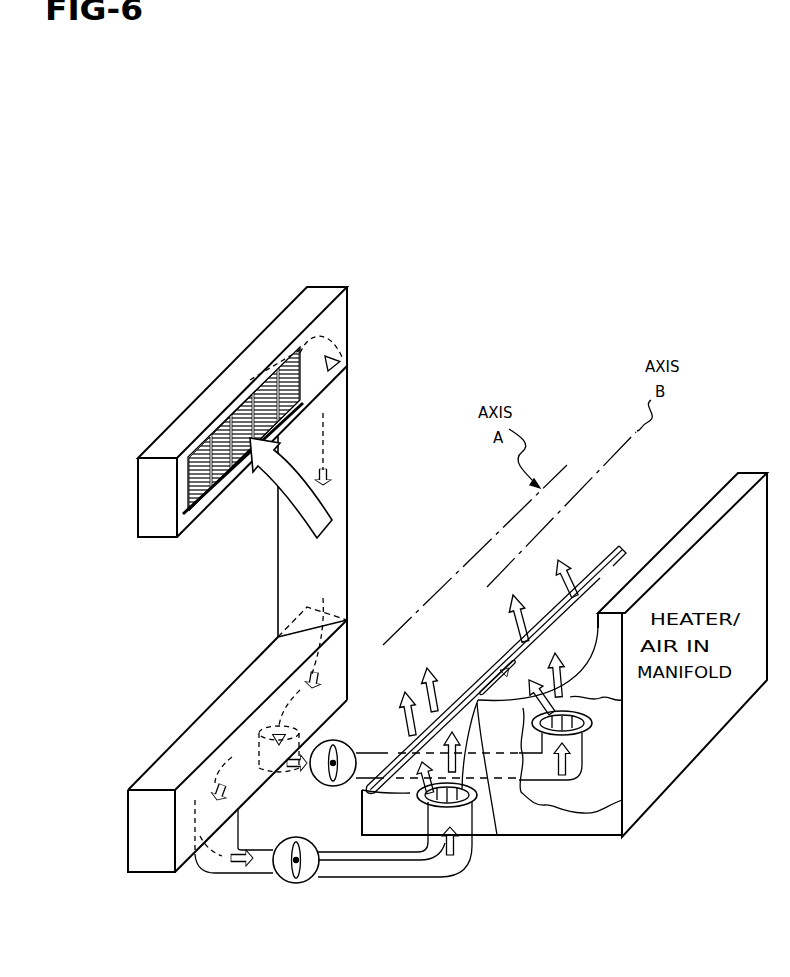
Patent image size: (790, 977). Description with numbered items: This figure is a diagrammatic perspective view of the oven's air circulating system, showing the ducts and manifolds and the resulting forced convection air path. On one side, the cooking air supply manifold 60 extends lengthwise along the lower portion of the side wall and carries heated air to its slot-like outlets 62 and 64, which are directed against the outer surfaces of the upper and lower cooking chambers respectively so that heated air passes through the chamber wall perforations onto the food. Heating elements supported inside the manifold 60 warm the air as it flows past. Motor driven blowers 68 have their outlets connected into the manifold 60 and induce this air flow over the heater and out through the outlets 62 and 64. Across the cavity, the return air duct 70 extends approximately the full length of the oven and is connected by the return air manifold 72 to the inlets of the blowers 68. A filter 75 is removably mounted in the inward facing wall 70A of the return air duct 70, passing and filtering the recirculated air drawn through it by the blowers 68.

The cooking air supply manifold 60 is at (516, 818).
The slot-like outlet 62 is at (600, 566).
The slot-like outlet 64 is at (466, 690).
The motor driven blowers 68 is at (320, 779).
The return air duct 70 is at (191, 426).
The inward facing wall 70A is at (183, 527).
The return air manifold 72 is at (292, 567).
The filter 75 is at (227, 470).